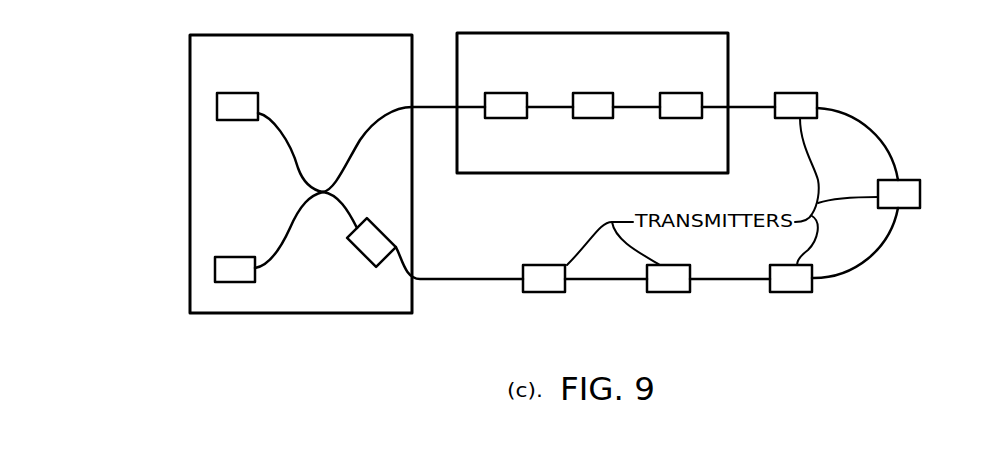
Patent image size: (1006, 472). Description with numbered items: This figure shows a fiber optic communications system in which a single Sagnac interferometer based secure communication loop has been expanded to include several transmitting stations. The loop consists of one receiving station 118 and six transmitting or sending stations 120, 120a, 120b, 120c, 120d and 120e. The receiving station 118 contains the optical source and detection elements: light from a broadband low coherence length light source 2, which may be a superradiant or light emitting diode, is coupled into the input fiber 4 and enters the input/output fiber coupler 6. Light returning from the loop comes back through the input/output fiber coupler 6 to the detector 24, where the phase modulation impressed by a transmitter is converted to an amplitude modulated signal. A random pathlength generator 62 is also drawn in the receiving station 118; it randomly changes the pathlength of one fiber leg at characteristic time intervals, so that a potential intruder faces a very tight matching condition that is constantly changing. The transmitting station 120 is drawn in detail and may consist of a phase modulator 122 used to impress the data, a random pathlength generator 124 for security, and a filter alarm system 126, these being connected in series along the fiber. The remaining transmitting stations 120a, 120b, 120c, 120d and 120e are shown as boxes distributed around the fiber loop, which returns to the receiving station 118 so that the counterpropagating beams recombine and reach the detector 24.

The light source 2 is at (258, 100).
The input fiber 4 is at (290, 144).
The input/output fiber coupler 6 is at (323, 192).
The detector 24 is at (255, 272).
The random pathlength generator 62 is at (373, 267).
The receiving station 118 is at (348, 35).
The transmitting station 120 is at (732, 33).
The transmitting station 120a is at (795, 93).
The transmitting station 120b is at (920, 197).
The transmitting station 120c is at (793, 292).
The transmitting station 120d is at (673, 292).
The transmitting station 120e is at (548, 292).
The phase modulator 122 is at (507, 96).
The random pathlength generator 124 is at (598, 118).
The filter alarm system 126 is at (683, 97).